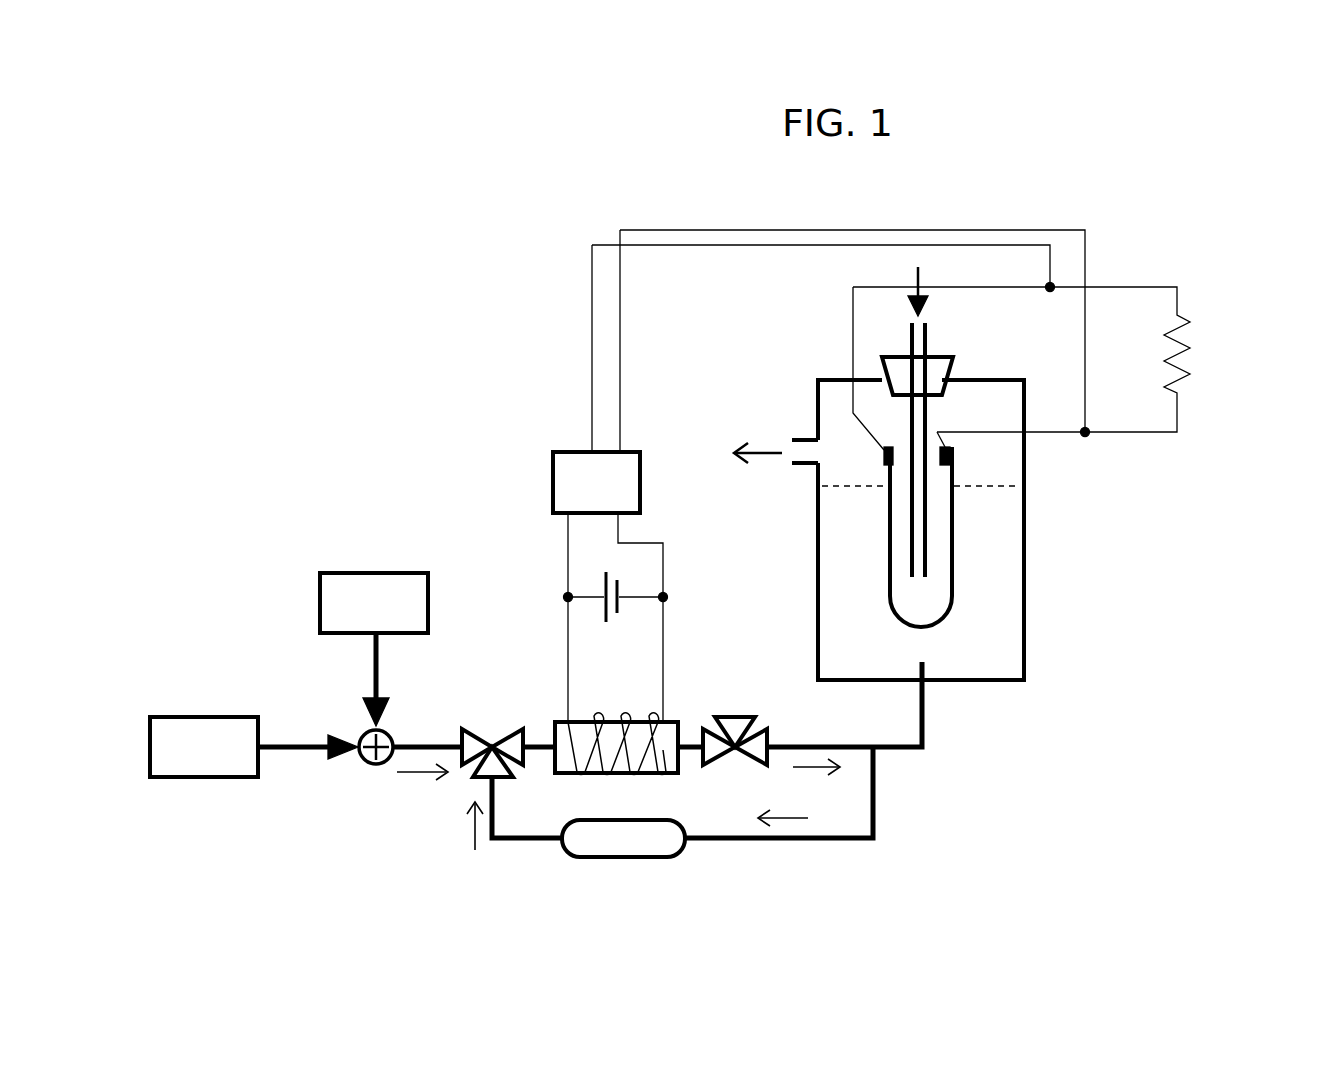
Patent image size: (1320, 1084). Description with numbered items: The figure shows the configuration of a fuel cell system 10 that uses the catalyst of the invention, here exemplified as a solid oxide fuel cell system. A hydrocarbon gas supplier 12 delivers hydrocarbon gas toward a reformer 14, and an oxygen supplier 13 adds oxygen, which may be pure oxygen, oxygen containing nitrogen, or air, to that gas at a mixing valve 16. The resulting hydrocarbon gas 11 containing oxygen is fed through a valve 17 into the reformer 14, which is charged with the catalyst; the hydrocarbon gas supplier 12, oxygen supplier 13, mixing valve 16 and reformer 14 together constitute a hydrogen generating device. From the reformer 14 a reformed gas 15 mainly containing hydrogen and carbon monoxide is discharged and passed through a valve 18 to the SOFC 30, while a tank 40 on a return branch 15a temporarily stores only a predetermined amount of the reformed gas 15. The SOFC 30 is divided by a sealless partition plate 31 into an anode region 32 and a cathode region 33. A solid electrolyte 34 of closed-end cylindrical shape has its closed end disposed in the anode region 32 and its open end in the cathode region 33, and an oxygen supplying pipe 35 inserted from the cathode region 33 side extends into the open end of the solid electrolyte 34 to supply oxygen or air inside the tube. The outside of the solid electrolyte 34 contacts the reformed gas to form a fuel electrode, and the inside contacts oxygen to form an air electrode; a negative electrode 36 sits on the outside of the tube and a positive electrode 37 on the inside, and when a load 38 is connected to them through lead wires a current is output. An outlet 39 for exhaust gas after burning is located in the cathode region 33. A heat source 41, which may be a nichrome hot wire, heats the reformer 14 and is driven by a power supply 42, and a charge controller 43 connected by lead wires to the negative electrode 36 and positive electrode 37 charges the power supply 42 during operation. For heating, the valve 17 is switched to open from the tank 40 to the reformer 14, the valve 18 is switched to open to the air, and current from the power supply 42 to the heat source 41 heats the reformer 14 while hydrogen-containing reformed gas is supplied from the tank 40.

The fuel cell system 10 is at (330, 381).
The hydrocarbon gas containing oxygen 11 is at (405, 798).
The hydrocarbon gas supplier 12 is at (201, 716).
The oxygen supplier 13 is at (375, 572).
The reformer 14 is at (680, 722).
The reformed gas 15 is at (682, 792).
The return flow 15a is at (484, 846).
The mixing valve 16 is at (394, 731).
The valve 17 is at (484, 736).
The valve 18 is at (760, 732).
The SOFC 30 is at (990, 527).
The sealless partition plate 31 is at (1024, 493).
The anode region 32 is at (990, 645).
The cathode region 33 is at (830, 398).
The solid electrolyte 34 is at (953, 557).
The oxygen supplying pipe 35 is at (912, 330).
The negative electrode 36 is at (884, 453).
The positive electrode 37 is at (952, 450).
The load 38 is at (1180, 318).
The outlet 39 is at (790, 440).
The tank 40 is at (660, 858).
The heat source 41 is at (620, 719).
The power supply 42 is at (603, 583).
The charge controller 43 is at (553, 470).